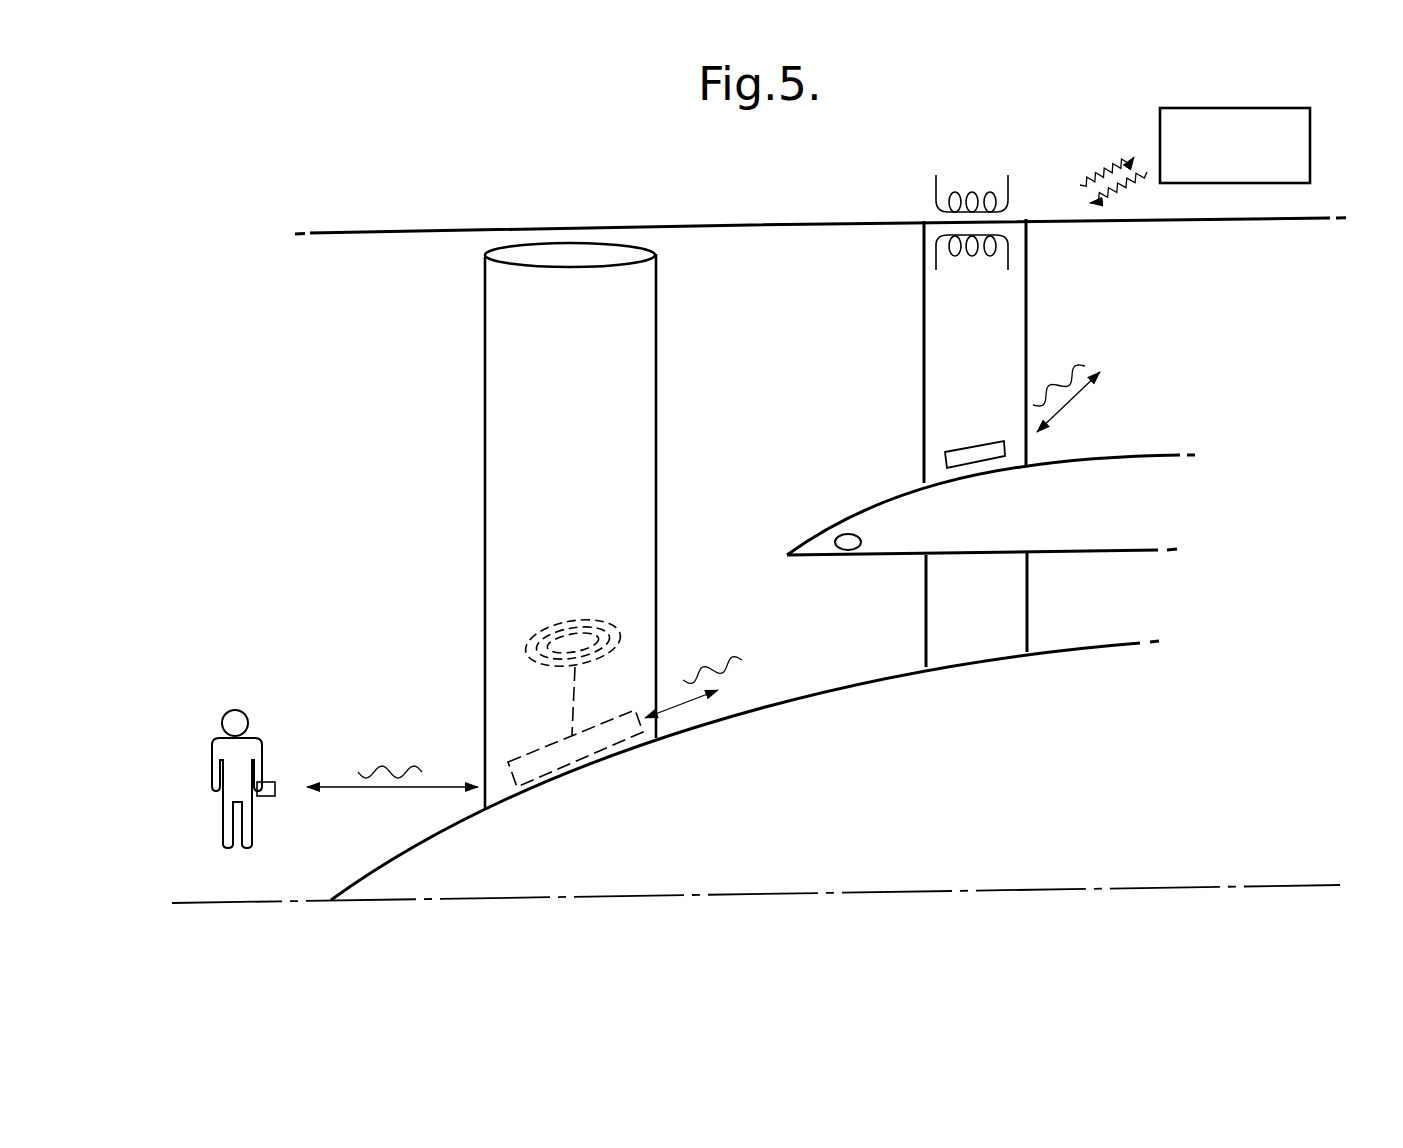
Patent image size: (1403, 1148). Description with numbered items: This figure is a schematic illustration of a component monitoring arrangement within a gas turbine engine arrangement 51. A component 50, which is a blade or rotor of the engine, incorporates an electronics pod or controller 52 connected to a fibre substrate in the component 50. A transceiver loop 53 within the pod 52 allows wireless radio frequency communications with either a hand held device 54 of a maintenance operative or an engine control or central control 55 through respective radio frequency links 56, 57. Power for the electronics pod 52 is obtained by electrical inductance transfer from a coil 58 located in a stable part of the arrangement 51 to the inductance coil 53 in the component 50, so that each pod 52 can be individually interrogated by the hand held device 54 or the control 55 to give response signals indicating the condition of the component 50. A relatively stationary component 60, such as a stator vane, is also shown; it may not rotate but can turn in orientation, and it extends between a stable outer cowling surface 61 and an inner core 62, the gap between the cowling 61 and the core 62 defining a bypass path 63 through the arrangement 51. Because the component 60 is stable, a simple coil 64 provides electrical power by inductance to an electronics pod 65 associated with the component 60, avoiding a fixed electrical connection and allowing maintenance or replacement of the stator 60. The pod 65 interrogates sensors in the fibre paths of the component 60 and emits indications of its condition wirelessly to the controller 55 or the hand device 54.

The component 50 is at (500, 372).
The engine arrangement 51 is at (285, 450).
The electronics pod 52 is at (593, 758).
The transceiver loop 53 is at (526, 641).
The hand held device 54 is at (267, 797).
The central control 55 is at (1285, 140).
The radio frequency link 56 is at (380, 765).
The radio frequency link 57 is at (715, 662).
The coil 58 is at (840, 530).
The component 60 is at (1000, 313).
The outer cowling surface 61 is at (752, 224).
The inner core 62 is at (1061, 521).
The bypass path 63 is at (1236, 341).
The coil 64 is at (968, 200).
The electronics pod 65 is at (968, 450).